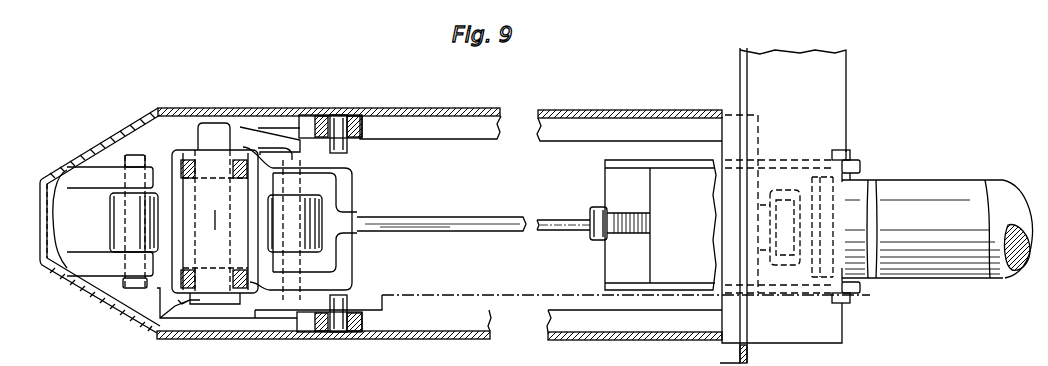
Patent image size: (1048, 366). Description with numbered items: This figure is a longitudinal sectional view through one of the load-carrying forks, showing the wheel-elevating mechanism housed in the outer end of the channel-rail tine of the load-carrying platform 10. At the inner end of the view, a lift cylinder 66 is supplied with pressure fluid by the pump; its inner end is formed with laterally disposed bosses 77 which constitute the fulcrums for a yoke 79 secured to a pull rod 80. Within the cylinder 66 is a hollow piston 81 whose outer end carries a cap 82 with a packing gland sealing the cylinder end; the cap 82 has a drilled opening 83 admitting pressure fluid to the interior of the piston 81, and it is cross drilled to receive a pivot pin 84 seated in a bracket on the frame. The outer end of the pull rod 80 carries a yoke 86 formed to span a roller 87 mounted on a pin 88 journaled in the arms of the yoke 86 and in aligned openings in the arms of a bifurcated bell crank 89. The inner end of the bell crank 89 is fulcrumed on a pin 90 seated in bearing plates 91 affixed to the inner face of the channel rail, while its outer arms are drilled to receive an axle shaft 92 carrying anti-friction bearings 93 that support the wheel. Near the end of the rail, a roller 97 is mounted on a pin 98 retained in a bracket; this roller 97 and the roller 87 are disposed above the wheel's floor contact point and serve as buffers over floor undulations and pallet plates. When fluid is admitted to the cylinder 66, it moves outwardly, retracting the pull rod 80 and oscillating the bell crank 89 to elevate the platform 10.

The load-carrying platform 10 is at (405, 112).
The lift cylinder 66 is at (932, 275).
The boss 77 is at (848, 158).
The yoke 79 is at (681, 165).
The pull rod 80 is at (538, 232).
The hollow piston 81 is at (1030, 275).
The cap 82 is at (822, 165).
The drilled opening 83 is at (793, 165).
The pivot pin 84 is at (780, 265).
The yoke 86 is at (336, 257).
The roller 87 is at (318, 212).
The pin 88 is at (292, 296).
The bifurcated bell crank 89 is at (265, 145).
The pin 90 is at (332, 125).
The bearing plate 91 is at (318, 125).
The axle shaft 92 is at (220, 133).
The anti-friction bearing 93 is at (148, 322).
The roller 97 is at (120, 222).
The pin 98 is at (118, 290).